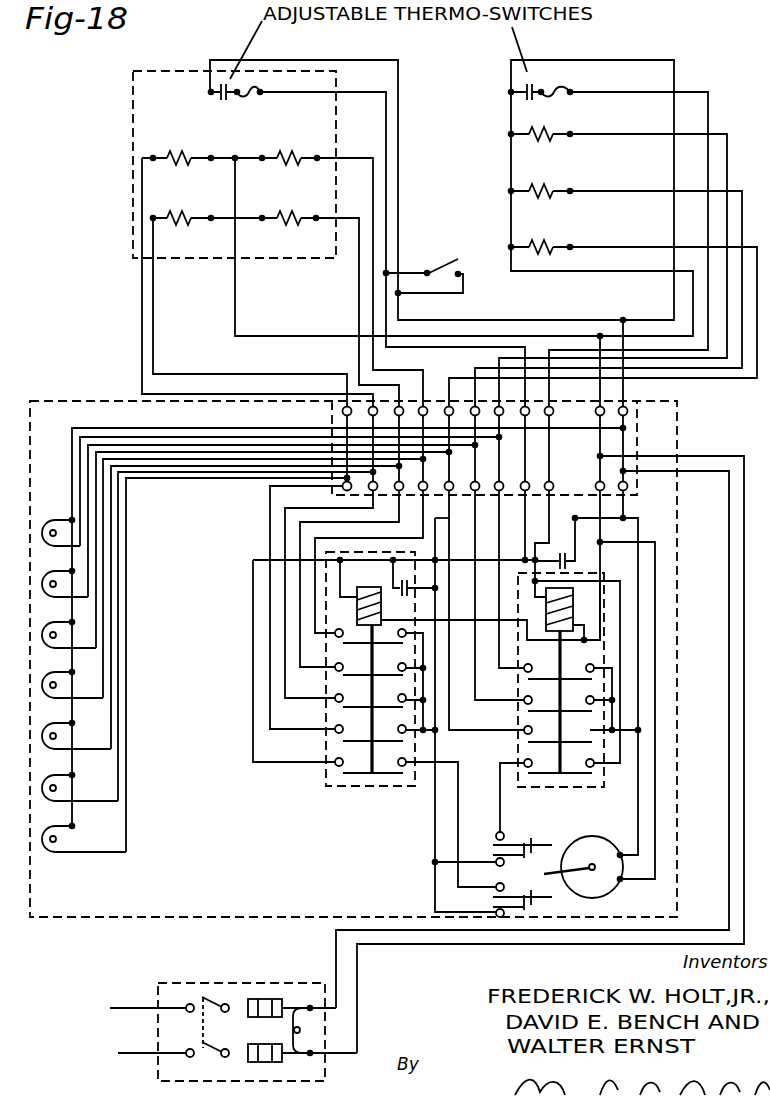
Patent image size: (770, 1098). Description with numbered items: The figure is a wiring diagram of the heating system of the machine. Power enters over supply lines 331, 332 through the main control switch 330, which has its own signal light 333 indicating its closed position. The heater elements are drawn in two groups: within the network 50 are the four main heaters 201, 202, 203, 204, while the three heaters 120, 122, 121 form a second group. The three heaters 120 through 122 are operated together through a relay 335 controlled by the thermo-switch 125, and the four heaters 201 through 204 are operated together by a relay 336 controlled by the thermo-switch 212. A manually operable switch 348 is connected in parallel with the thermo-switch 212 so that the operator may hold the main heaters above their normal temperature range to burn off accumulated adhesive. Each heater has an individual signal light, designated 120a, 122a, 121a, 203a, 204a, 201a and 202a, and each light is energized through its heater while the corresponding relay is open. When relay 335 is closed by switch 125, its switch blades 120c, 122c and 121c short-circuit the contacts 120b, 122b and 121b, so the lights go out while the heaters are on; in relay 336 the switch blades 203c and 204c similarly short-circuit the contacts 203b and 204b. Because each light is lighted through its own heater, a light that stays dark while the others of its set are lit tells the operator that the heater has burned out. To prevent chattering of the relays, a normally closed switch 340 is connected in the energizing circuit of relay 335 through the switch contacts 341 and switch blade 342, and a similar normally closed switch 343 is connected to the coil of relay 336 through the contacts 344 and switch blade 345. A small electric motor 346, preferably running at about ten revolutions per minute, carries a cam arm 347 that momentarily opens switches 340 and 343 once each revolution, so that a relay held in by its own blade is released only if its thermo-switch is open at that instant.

The thermostat resistor network 50 is at (133, 240).
The thermo-switch 212 is at (257, 88).
The thermo-switch 125 is at (569, 89).
The heater 120 is at (532, 132).
The heater 122 is at (540, 184).
The heater 121 is at (540, 240).
The heater 201 is at (175, 152).
The heater 202 is at (178, 212).
The heater 203 is at (284, 152).
The heater 204 is at (284, 213).
The manually operable switch 348 is at (462, 271).
The signal light 120a is at (56, 533).
The signal light 122a is at (56, 584).
The signal light 121a is at (56, 635).
The signal light 203a is at (56, 685).
The signal light 204a is at (56, 736).
The signal light 201a is at (56, 788).
The signal light 202a is at (56, 839).
The relay 336 is at (371, 590).
The switch blade 345 is at (373, 726).
The switch blade 203c is at (348, 628).
The contacts 203b is at (336, 660).
The contacts 204b is at (345, 670).
The switch blade 204c is at (347, 682).
The contacts 344 is at (339, 758).
The relay 335 is at (575, 624).
The switch blade 342 is at (580, 778).
The contacts 120b is at (535, 665).
The switch blade 120c is at (597, 665).
The contacts 122b is at (535, 698).
The switch blade 122c is at (597, 698).
The contacts 121b is at (535, 728).
The switch blade 121c is at (597, 762).
The switch contacts 341 is at (526, 759).
The normally closed switch 340 is at (522, 843).
The normally closed switch 343 is at (498, 907).
The electric motor 346 is at (622, 867).
The cam arm 347 is at (558, 882).
The main control switch 330 is at (210, 998).
The supply line 331 is at (130, 1007).
The supply line 332 is at (128, 1052).
The signal light 333 is at (300, 1030).